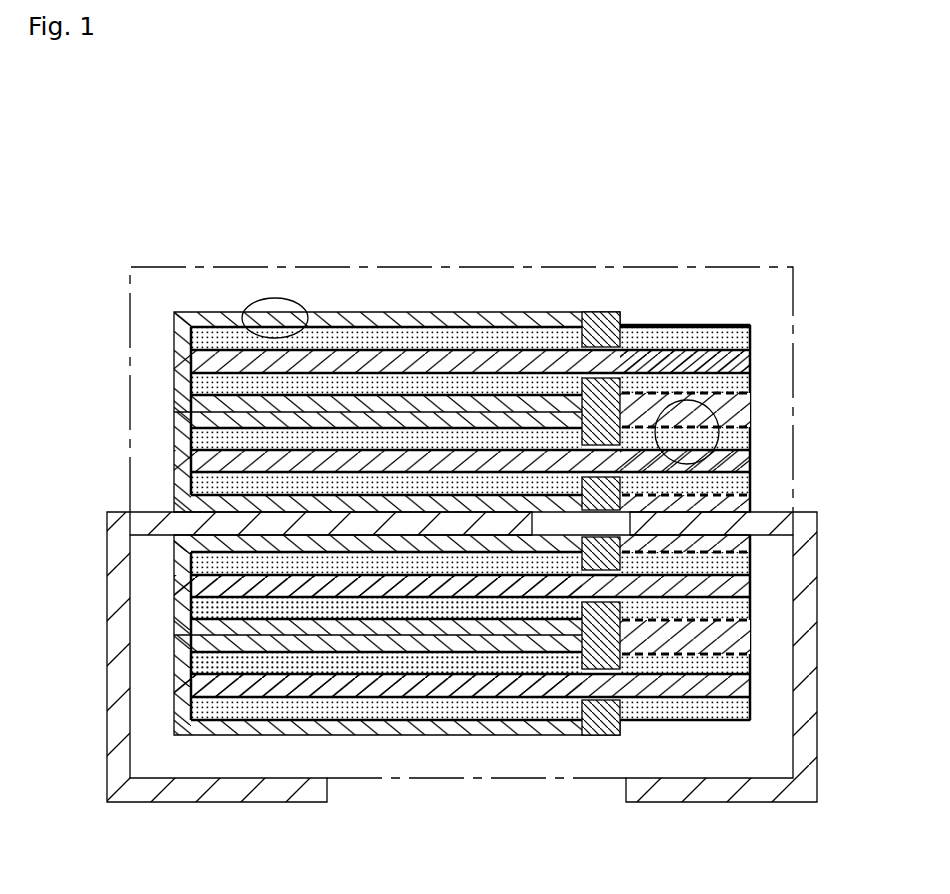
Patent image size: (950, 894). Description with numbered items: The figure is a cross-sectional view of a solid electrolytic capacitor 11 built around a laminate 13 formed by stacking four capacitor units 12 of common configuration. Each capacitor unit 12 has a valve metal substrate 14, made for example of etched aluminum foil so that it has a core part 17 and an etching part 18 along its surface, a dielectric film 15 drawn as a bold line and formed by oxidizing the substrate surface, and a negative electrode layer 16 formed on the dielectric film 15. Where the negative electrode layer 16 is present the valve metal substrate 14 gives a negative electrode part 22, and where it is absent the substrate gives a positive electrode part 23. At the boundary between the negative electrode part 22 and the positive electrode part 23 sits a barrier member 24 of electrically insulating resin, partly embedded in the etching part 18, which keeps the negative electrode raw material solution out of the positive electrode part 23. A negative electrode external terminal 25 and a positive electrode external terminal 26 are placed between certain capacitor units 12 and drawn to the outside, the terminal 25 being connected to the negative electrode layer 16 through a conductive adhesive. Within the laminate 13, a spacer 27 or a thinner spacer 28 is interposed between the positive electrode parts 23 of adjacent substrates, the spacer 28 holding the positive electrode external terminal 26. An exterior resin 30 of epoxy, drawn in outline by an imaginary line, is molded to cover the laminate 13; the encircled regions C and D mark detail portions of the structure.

The solid electrolytic capacitor 11 is at (291, 153).
The capacitor unit 12 is at (174, 372).
The laminate 13 is at (207, 735).
The valve metal substrate 14 is at (566, 811).
The dielectric film 15 is at (381, 703).
The negative electrode layer 16 is at (272, 731).
The core part 17 is at (512, 683).
The etching part 18 is at (443, 663).
The negative electrode part 22 is at (582, 263).
The positive electrode part 23 is at (750, 262).
The barrier member 24 is at (595, 312).
The negative electrode external terminal 25 is at (135, 792).
The positive electrode external terminal 26 is at (795, 792).
The spacer 27 is at (733, 408).
The spacer 28 is at (743, 505).
The exterior resin 30 is at (767, 267).
The enlarged portion C is at (249, 305).
The enlarged portion D is at (719, 436).